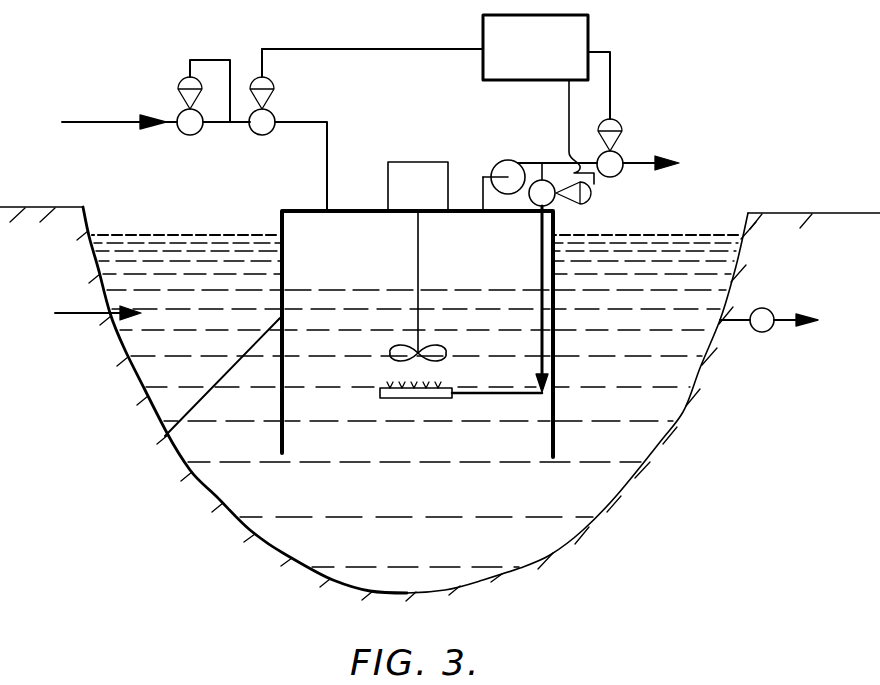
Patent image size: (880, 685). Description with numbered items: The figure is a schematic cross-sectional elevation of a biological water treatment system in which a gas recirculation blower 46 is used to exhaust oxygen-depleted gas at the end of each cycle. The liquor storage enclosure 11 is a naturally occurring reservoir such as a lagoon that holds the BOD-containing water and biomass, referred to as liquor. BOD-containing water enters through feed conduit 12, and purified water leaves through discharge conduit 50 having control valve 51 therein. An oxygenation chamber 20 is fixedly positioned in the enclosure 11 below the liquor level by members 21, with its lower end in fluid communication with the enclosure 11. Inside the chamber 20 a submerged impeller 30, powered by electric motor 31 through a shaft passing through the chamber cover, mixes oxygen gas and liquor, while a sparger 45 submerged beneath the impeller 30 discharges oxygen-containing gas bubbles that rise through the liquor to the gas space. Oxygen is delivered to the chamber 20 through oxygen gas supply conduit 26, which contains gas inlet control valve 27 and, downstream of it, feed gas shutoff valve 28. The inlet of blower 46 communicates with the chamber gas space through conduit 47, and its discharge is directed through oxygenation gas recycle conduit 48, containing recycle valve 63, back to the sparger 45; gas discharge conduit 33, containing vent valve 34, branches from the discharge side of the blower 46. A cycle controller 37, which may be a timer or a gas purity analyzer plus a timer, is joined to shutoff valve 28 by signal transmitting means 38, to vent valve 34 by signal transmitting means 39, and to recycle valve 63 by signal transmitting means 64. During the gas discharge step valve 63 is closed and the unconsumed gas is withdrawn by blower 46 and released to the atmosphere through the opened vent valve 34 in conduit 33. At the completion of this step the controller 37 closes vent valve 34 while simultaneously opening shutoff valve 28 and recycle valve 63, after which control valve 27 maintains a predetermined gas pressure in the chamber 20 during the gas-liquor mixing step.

The liquor storage enclosure 11 is at (183, 462).
The BOD-containing water feed conduit 12 is at (70, 313).
The oxygenation chamber 20 is at (554, 405).
The members 21 is at (224, 378).
The oxygen gas supply conduit 26 is at (68, 121).
The gas inlet control valve 27 is at (178, 114).
The feed gas shutoff valve 28 is at (251, 132).
The impeller 30 is at (443, 350).
The electric motor 31 is at (418, 162).
The gas discharge conduit 33 is at (640, 164).
The vent valve 34 is at (620, 153).
The cycle controller 37 is at (588, 40).
The signal transmitting means 38 is at (353, 49).
The signal transmitting means 39 is at (610, 100).
The sparger 45 is at (378, 395).
The gas recirculation blower 46 is at (507, 162).
The conduit 47 is at (482, 190).
The oxygenation gas recycle conduit 48 is at (542, 270).
The purified water discharge conduit 50 is at (736, 322).
The control valve 51 is at (770, 311).
The oxygenation gas recycle valve 63 is at (552, 203).
The signal transmitting means 64 is at (569, 107).